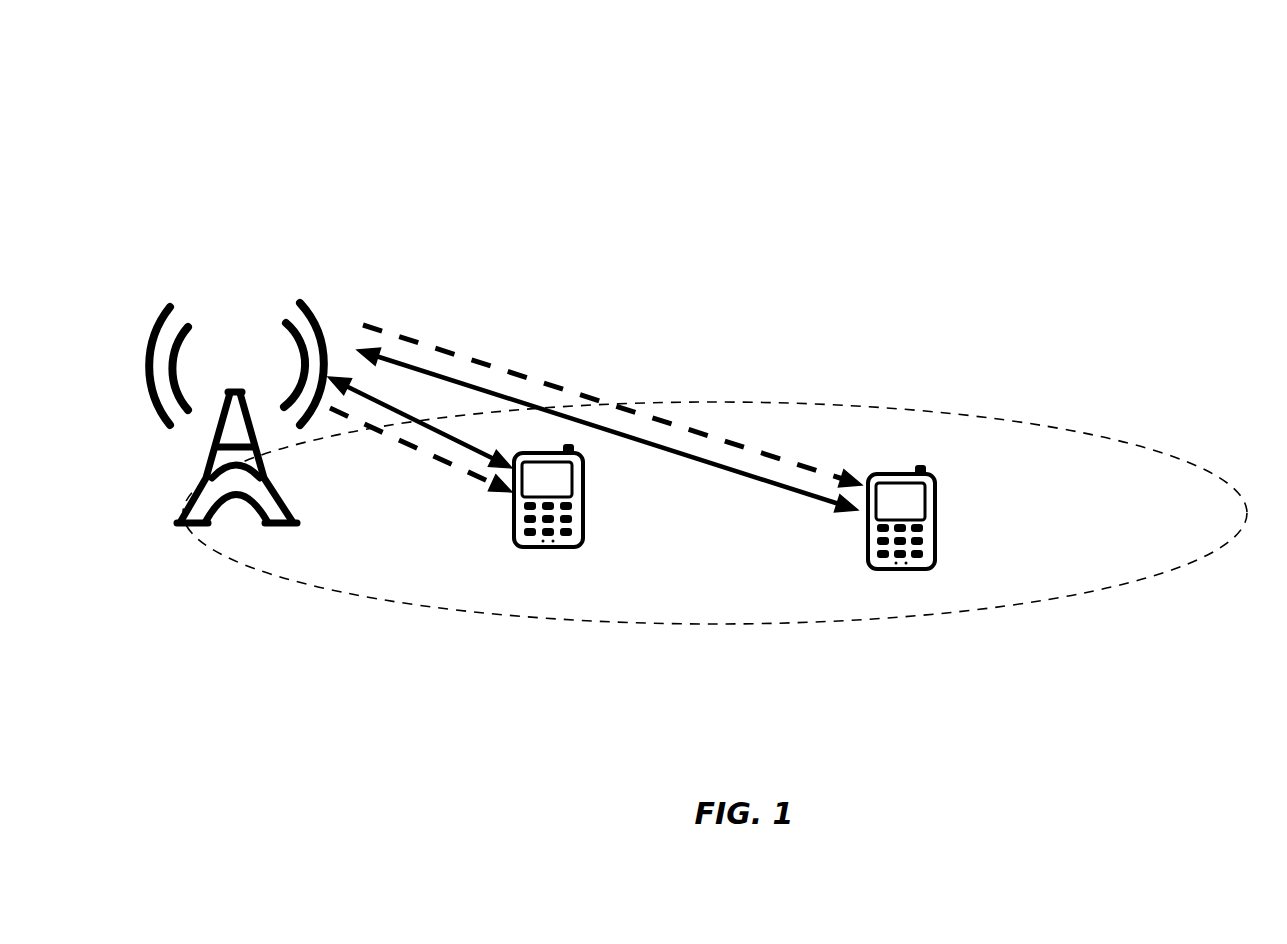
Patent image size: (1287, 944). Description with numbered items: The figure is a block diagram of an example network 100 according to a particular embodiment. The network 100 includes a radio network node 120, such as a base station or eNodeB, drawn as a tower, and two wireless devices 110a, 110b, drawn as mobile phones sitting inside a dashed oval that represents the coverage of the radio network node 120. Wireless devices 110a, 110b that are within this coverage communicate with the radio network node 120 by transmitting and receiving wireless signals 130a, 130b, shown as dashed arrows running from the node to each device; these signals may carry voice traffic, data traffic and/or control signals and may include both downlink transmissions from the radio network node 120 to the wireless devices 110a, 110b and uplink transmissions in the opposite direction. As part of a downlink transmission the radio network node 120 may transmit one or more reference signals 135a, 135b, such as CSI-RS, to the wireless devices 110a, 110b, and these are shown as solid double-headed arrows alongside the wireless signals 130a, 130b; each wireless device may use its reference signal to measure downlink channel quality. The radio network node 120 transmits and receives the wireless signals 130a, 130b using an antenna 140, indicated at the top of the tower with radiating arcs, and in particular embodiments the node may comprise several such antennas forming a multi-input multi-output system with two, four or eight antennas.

The network 100 is at (715, 335).
The radio network node 120 is at (236, 351).
The antenna 140 is at (195, 390).
The wireless device 110a is at (548, 540).
The wireless device 110b is at (898, 560).
The wireless signal 130a is at (463, 450).
The wireless signal 130b is at (847, 480).
The reference signal 135a is at (370, 443).
The reference signal 135b is at (579, 393).